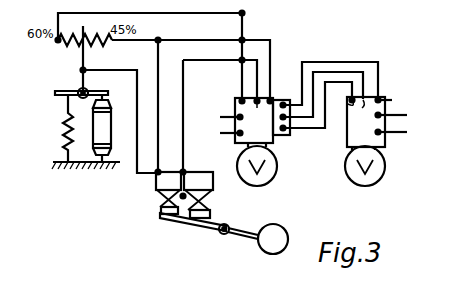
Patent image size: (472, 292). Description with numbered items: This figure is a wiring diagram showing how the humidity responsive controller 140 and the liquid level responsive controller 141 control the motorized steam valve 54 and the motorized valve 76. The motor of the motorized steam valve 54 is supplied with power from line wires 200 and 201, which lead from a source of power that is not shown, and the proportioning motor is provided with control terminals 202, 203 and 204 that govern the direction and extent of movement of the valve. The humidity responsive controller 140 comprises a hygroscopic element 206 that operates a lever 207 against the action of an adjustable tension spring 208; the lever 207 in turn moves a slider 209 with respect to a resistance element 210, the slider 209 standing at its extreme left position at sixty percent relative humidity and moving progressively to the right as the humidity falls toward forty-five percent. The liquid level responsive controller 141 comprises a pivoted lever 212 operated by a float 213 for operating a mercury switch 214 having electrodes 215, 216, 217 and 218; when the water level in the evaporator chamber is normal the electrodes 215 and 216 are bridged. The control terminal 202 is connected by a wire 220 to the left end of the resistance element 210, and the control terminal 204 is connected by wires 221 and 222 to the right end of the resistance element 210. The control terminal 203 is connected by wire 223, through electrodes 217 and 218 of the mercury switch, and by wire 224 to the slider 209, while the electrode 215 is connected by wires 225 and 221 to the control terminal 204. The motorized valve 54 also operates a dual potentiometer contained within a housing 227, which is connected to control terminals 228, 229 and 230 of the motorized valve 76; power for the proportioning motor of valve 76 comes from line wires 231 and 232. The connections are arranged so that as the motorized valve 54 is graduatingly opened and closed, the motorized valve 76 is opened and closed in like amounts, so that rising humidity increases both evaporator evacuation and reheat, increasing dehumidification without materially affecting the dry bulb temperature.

The humidity responsive controller 140 is at (45, 145).
The liquid level responsive controller 141 is at (176, 251).
The motorized steam valve 54 is at (240, 143).
The motorized valve 76 is at (347, 141).
The line wire 200 is at (218, 117).
The line wire 201 is at (218, 133).
The control terminal 202 is at (240, 100).
The control terminal 203 is at (254, 120).
The control terminal 204 is at (274, 98).
The hygroscopic element 206 is at (108, 126).
The lever 207 is at (72, 93).
The adjustable tension spring 208 is at (65, 128).
The slider 209 is at (80, 57).
The resistance element 210 is at (90, 44).
The pivoted lever 212 is at (228, 236).
The float 213 is at (278, 252).
The mercury switch 214 is at (160, 220).
The electrode 215 is at (163, 212).
The electrode 216 is at (169, 192).
The electrode 217 is at (197, 194).
The electrode 218 is at (214, 208).
The wire 220 is at (241, 71).
The wire 221 is at (270, 62).
The wire 222 is at (126, 42).
The wire 223 is at (204, 50).
The wire 224 is at (136, 176).
The wire 225 is at (164, 49).
The housing 227 is at (285, 138).
The control terminal 228 is at (350, 100).
The control terminal 229 is at (361, 113).
The control terminal 230 is at (396, 99).
The line wire 231 is at (394, 116).
The line wire 232 is at (401, 135).